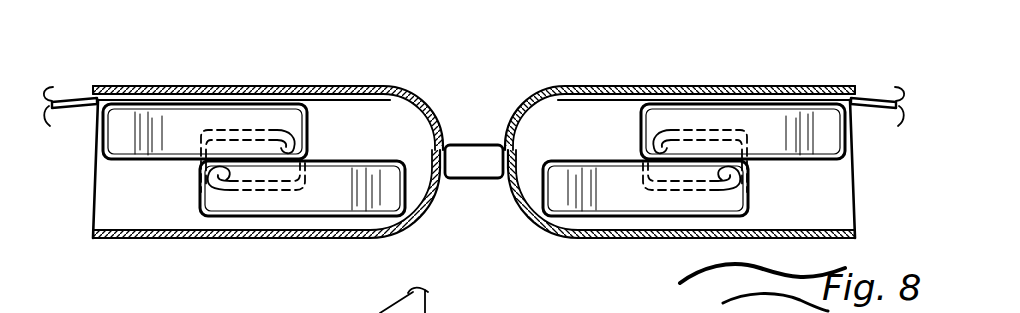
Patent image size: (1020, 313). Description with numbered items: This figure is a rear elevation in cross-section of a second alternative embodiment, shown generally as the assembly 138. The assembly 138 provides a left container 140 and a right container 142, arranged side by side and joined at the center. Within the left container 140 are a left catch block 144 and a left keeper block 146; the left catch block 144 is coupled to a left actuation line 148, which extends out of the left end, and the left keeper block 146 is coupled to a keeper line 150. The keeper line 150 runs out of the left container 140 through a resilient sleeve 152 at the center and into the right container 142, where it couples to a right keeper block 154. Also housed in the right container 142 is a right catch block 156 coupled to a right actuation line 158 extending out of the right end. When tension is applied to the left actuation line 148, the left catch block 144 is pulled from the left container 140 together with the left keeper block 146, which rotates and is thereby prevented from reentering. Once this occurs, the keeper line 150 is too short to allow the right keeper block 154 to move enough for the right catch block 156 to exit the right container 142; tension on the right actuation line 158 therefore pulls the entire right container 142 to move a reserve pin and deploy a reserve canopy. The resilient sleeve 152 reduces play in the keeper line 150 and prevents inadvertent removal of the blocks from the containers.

The second alternative embodiment 138 is at (284, 46).
The left container 140 is at (208, 90).
The right container 142 is at (787, 90).
The left catch block 144 is at (384, 203).
The left keeper block 146 is at (255, 118).
The left actuation line 148 is at (60, 107).
The keeper line 150 is at (504, 144).
The resilient sleeve 152 is at (473, 173).
The right keeper block 154 is at (698, 117).
The right catch block 156 is at (568, 197).
The right actuation line 158 is at (889, 106).